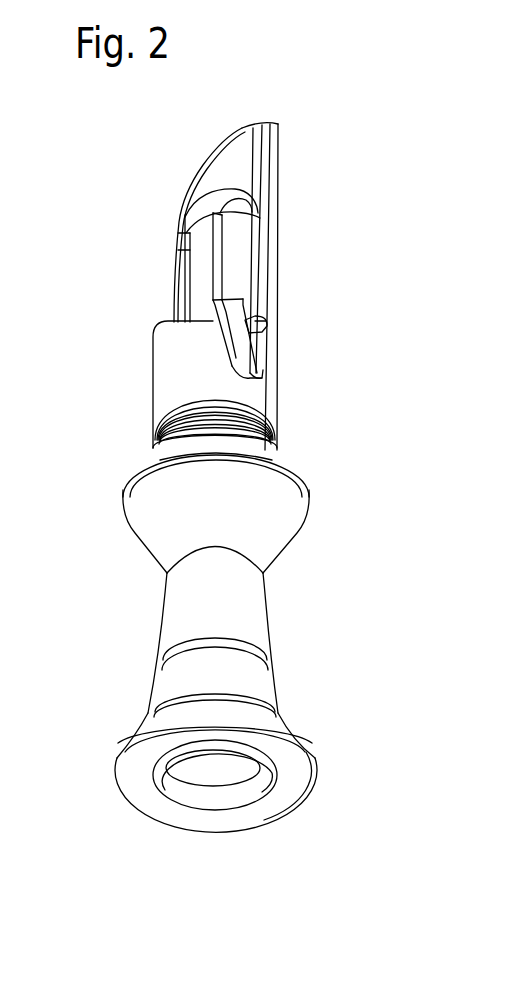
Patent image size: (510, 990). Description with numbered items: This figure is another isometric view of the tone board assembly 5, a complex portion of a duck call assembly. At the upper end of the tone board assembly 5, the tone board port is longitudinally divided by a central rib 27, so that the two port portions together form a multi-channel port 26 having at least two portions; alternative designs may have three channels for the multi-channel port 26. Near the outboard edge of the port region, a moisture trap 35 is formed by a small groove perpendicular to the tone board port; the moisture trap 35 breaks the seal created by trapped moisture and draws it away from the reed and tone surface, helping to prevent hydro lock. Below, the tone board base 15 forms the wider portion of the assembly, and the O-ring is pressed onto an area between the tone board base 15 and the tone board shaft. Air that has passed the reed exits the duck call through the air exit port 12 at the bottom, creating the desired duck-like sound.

The tone board assembly 5 is at (325, 660).
The air exit port 12 is at (217, 750).
The tone board base 15 is at (273, 517).
The multi-channel port 26 is at (200, 250).
The central rib 27 is at (212, 282).
The moisture trap 35 is at (265, 320).